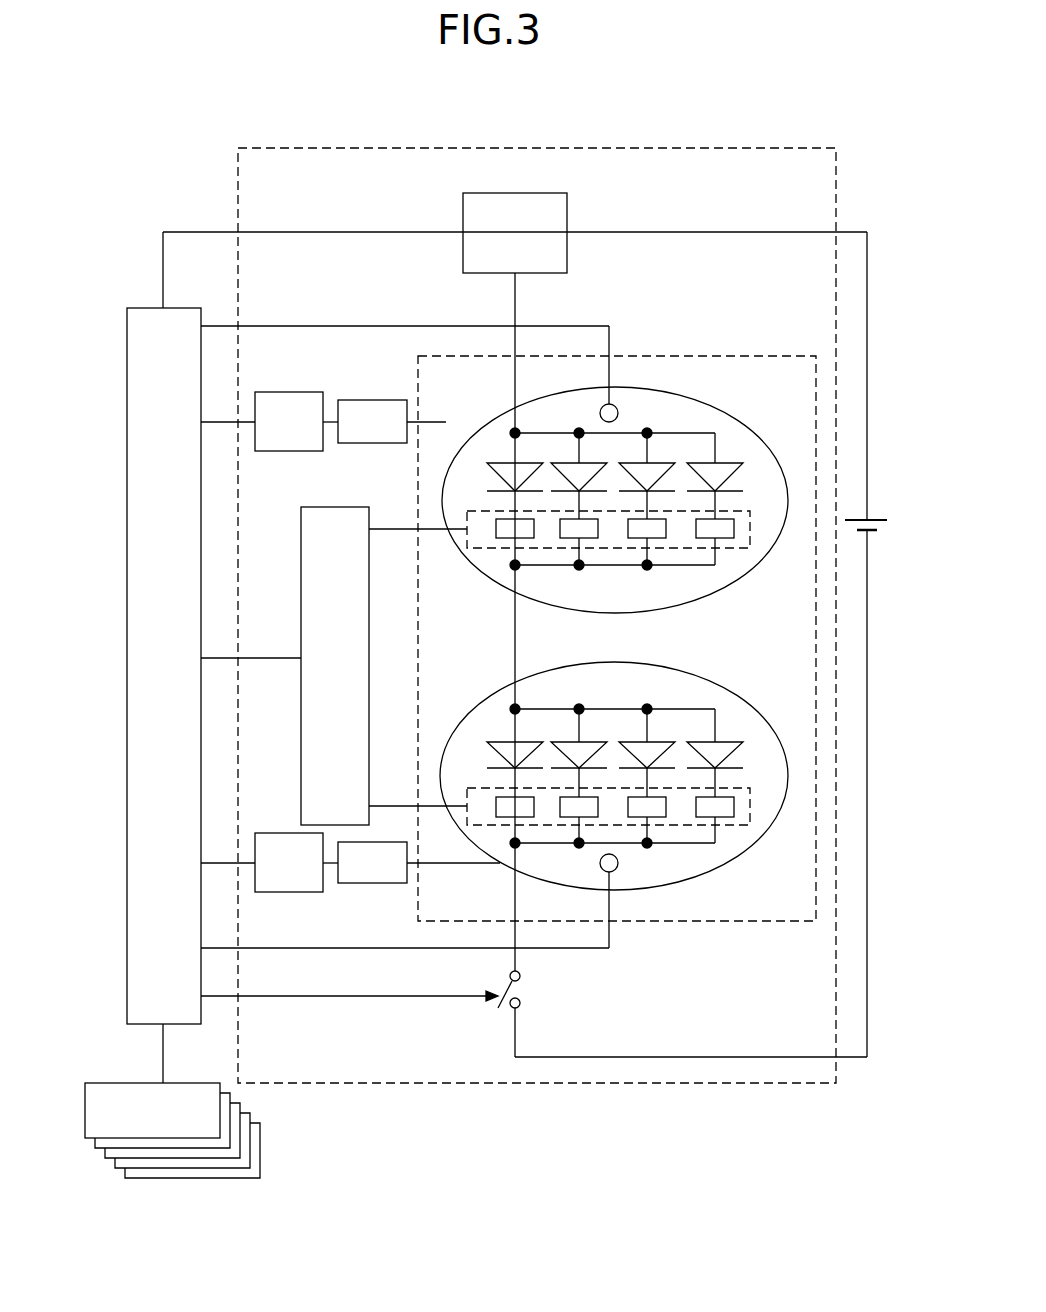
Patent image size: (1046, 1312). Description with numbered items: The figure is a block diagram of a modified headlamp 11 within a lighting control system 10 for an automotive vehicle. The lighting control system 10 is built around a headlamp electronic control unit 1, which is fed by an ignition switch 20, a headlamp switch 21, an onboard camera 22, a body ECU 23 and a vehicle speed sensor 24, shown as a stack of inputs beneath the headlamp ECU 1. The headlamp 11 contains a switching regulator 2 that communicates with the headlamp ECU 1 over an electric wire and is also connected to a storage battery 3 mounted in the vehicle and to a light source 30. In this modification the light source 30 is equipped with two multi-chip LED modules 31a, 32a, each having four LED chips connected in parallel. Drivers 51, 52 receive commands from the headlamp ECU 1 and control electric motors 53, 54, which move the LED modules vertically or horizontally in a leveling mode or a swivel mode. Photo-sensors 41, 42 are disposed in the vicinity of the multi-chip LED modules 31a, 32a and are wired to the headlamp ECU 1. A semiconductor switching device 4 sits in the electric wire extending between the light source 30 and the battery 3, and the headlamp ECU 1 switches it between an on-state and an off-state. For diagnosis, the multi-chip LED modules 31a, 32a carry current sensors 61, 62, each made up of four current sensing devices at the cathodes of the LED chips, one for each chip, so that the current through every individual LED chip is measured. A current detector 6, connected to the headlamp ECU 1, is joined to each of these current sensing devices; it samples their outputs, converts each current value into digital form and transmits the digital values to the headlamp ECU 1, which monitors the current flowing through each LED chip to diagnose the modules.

The headlamp electronic control unit 1 is at (150, 307).
The switching regulator 2 is at (545, 193).
The storage battery 3 is at (880, 519).
The semiconductor switching device 4 is at (514, 990).
The current detector 6 is at (334, 506).
The lighting control system 10 is at (456, 138).
The headlamp 11 is at (703, 123).
The ignition switch 20 is at (227, 1139).
The headlamp switch 21 is at (162, 1120).
The onboard camera 22 is at (172, 1130).
The body ECU 23 is at (182, 1140).
The vehicle speed sensor 24 is at (192, 1150).
The light source 30 is at (720, 356).
The multi-chip LED module 31a is at (624, 499).
The multi-chip LED module 32a is at (623, 777).
The photo-sensor 41 is at (613, 405).
The photo-sensor 42 is at (611, 870).
The driver 51 is at (275, 392).
The driver 52 is at (293, 893).
The electric motor 53 is at (366, 400).
The electric motor 54 is at (380, 884).
The current sensor 61 is at (740, 548).
The current sensor 62 is at (740, 825).